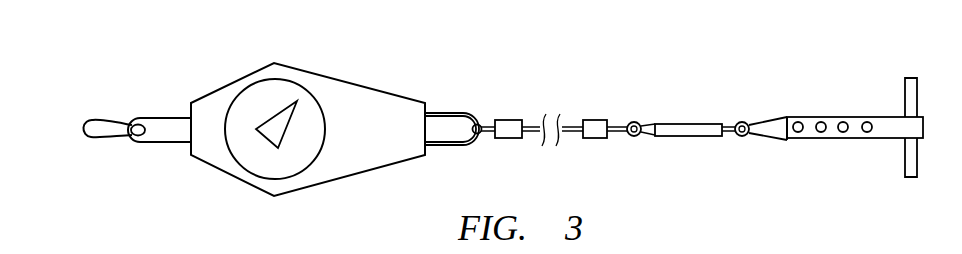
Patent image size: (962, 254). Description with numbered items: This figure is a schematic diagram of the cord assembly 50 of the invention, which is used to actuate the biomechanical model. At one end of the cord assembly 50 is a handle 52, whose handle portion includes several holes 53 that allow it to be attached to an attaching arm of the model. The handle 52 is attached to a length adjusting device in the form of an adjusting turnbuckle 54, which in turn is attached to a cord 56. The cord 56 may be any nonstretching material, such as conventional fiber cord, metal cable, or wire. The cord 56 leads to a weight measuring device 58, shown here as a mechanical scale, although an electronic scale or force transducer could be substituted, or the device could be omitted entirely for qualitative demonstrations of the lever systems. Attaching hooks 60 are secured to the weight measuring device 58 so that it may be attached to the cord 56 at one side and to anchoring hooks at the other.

The cord assembly 50 is at (508, 71).
The handle 52 is at (880, 117).
The holes 53 is at (867, 132).
The adjusting turnbuckle 54 is at (682, 123).
The cord 56 is at (565, 127).
The weight measuring device 58 is at (371, 98).
The attaching hooks 60 is at (97, 121).